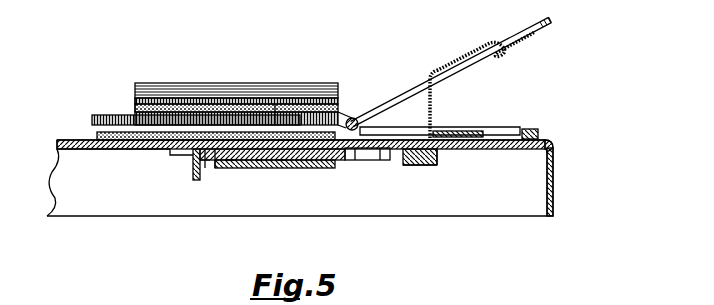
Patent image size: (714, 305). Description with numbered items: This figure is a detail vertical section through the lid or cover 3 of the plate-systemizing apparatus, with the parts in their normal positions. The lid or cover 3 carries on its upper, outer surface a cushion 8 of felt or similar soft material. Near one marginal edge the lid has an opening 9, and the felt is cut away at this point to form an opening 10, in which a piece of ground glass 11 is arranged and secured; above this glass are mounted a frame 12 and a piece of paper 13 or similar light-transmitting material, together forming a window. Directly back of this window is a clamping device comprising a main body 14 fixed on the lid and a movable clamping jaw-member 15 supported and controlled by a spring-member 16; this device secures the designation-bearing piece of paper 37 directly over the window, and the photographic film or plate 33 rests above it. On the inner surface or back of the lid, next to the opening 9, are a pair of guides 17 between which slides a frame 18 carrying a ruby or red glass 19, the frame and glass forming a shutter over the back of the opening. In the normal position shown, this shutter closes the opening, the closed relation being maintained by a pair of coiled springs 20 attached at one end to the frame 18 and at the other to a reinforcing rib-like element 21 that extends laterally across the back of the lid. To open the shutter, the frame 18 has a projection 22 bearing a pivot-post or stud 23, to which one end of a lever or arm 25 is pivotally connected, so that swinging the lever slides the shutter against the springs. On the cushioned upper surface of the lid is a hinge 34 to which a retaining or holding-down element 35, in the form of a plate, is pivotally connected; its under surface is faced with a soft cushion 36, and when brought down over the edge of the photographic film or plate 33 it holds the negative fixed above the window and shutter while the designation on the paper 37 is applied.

The lid or cover 3 is at (72, 139).
The cushion 8 is at (98, 134).
The opening 9 is at (259, 167).
The opening 10 is at (355, 160).
The ground glass 11 is at (283, 167).
The frame 12 is at (232, 108).
The piece of paper 13 is at (275, 118).
The main body 14 is at (533, 129).
The movable clamping jaw-member 15 is at (413, 92).
The spring-member 16 is at (445, 72).
The guides 17 is at (205, 168).
The frame 18 is at (217, 165).
The ruby or red glass 19 is at (297, 168).
The coiled springs 20 is at (229, 167).
The reinforcing rib-like element 21 is at (193, 172).
The projection 22 is at (410, 165).
The pivot-post or stud 23 is at (420, 165).
The lever or arm 25 is at (438, 153).
The photographic film or plate 33 is at (110, 116).
The hinge 34 is at (170, 88).
The retaining or holding-down element 35 is at (155, 108).
The cushion 36 is at (135, 106).
The piece of paper 37 is at (350, 115).